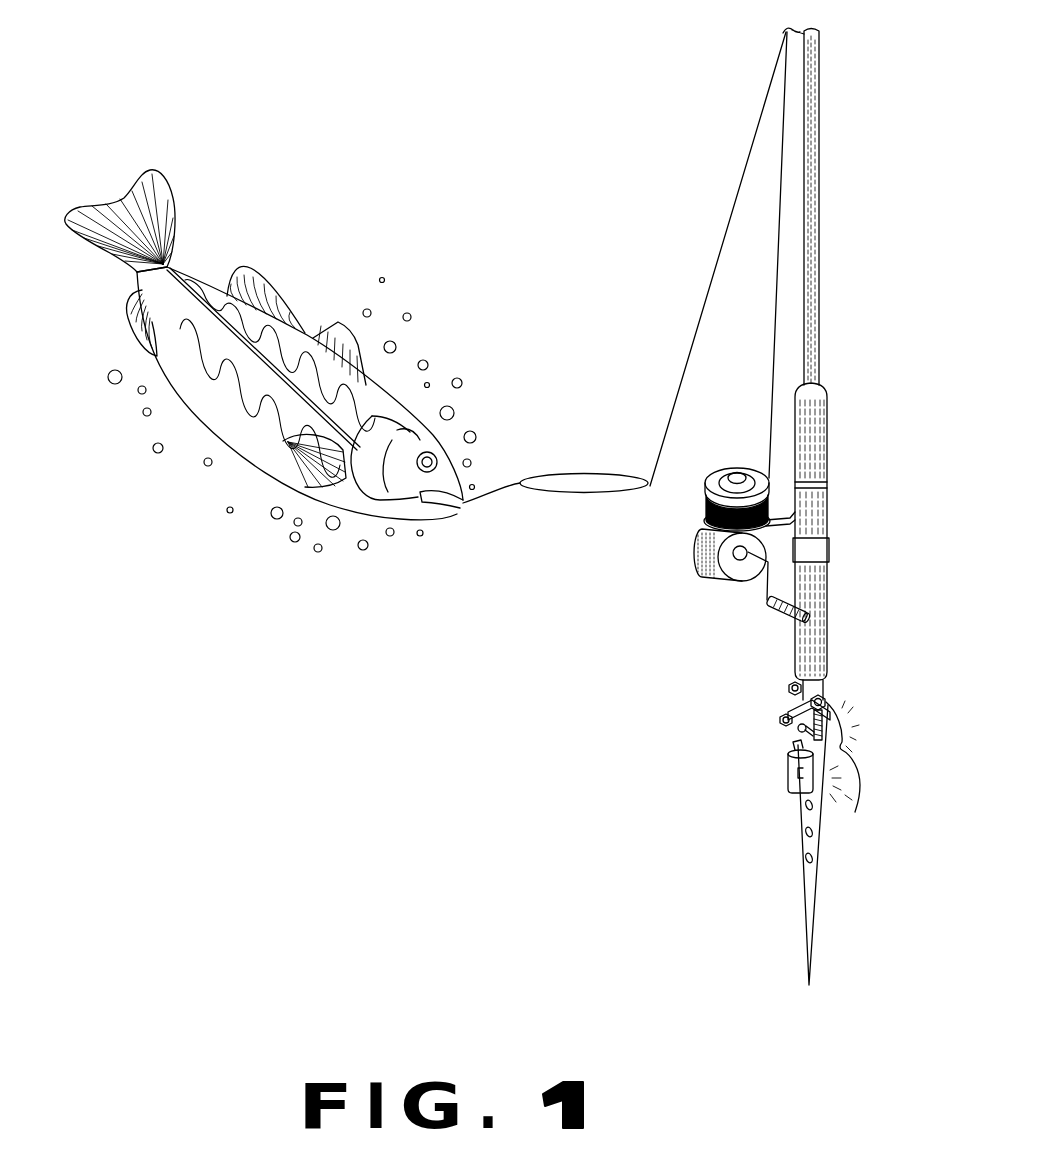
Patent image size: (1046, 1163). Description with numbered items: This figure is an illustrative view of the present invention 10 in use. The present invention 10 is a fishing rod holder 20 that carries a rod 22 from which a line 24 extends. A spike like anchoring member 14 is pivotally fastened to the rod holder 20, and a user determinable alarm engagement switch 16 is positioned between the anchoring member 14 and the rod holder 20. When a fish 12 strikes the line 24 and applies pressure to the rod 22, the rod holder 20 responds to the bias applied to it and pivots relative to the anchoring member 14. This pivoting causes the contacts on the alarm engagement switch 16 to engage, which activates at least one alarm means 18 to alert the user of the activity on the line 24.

The present invention 10 is at (615, 343).
The fish 12 is at (307, 332).
The spike like anchoring member 14 is at (800, 848).
The alarm engagement switch 16 is at (762, 745).
The alarm means 18 is at (856, 812).
The fishing rod holder 20 is at (790, 650).
The rod 22 is at (817, 290).
The line 24 is at (707, 288).